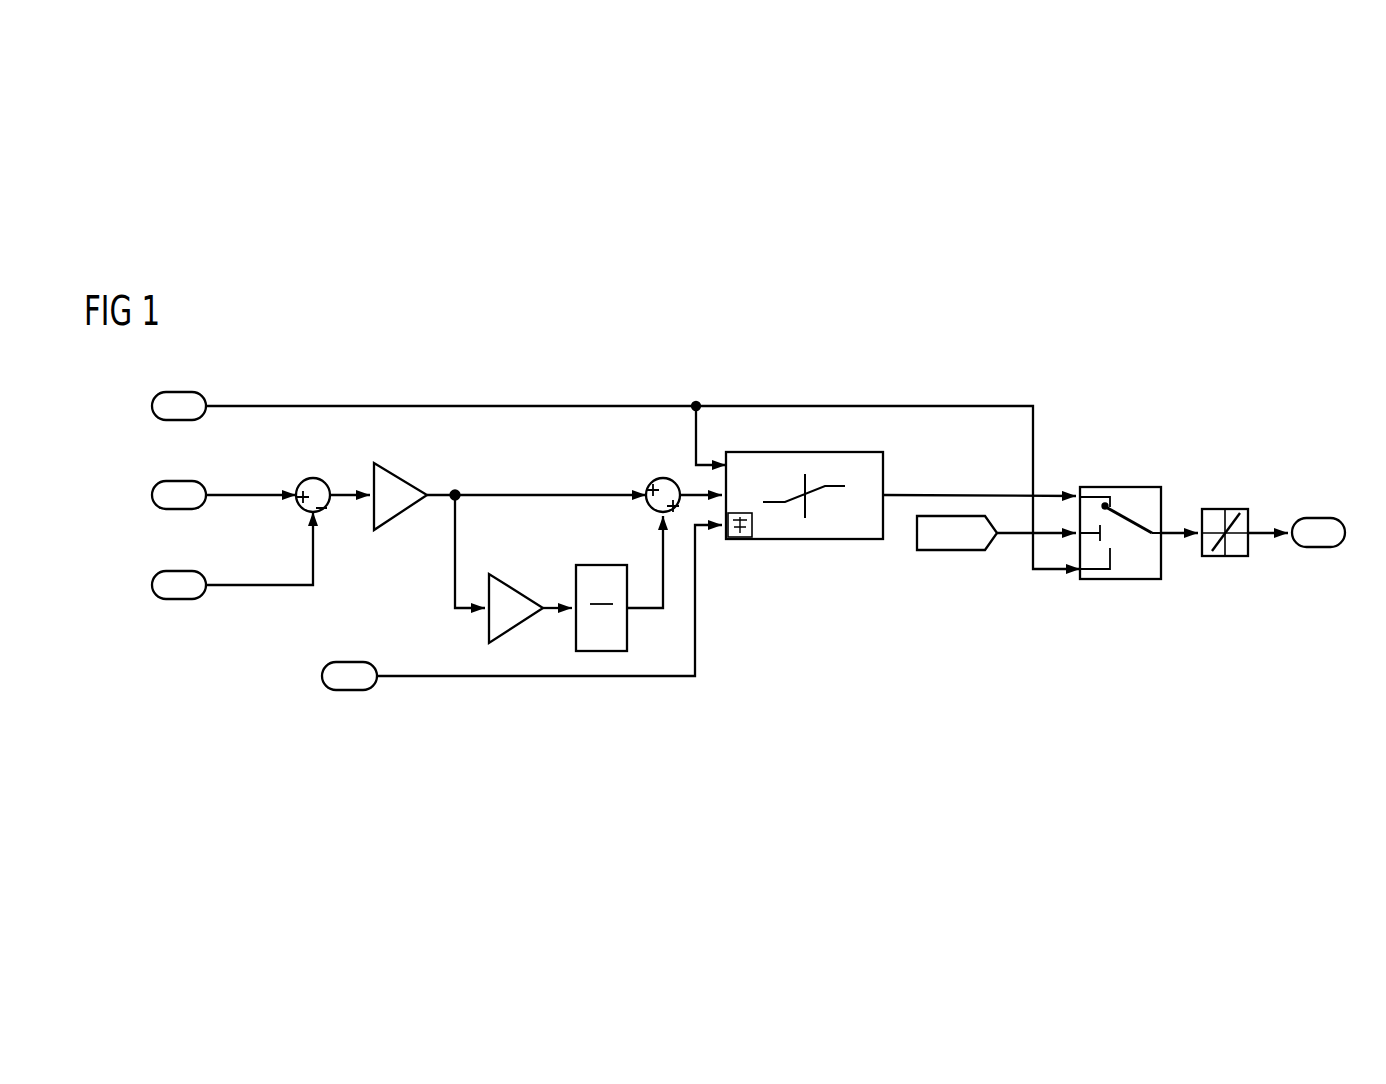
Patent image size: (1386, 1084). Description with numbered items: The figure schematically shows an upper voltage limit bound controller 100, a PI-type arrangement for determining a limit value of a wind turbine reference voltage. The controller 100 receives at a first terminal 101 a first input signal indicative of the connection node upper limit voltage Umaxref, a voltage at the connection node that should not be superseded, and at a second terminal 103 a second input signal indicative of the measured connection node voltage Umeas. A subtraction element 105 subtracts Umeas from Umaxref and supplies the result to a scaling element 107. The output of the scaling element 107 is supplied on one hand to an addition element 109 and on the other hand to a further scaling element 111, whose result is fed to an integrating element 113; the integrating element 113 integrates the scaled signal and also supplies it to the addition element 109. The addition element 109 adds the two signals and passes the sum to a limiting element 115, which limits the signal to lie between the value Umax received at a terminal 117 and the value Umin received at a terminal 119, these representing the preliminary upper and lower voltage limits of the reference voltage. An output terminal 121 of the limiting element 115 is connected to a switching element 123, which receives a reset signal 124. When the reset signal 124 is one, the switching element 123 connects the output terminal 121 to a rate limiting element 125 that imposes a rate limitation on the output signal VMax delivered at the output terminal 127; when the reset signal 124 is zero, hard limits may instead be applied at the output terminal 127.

The upper voltage limit bound controller 100 is at (1174, 348).
The first terminal 101 is at (150, 493).
The second terminal 103 is at (150, 582).
The subtraction element 105 is at (313, 478).
The scaling element 107 is at (404, 476).
The addition element 109 is at (663, 478).
The further scaling element 111 is at (518, 590).
The integrating element 113 is at (600, 565).
The limiting element 115 is at (805, 539).
The terminal 117 is at (150, 403).
The terminal 119 is at (320, 673).
The output terminal 121 is at (890, 494).
The switching element 123 is at (1121, 487).
The reset signal 124 is at (952, 552).
The rate limiting element 125 is at (1228, 509).
The output terminal 127 is at (1318, 518).